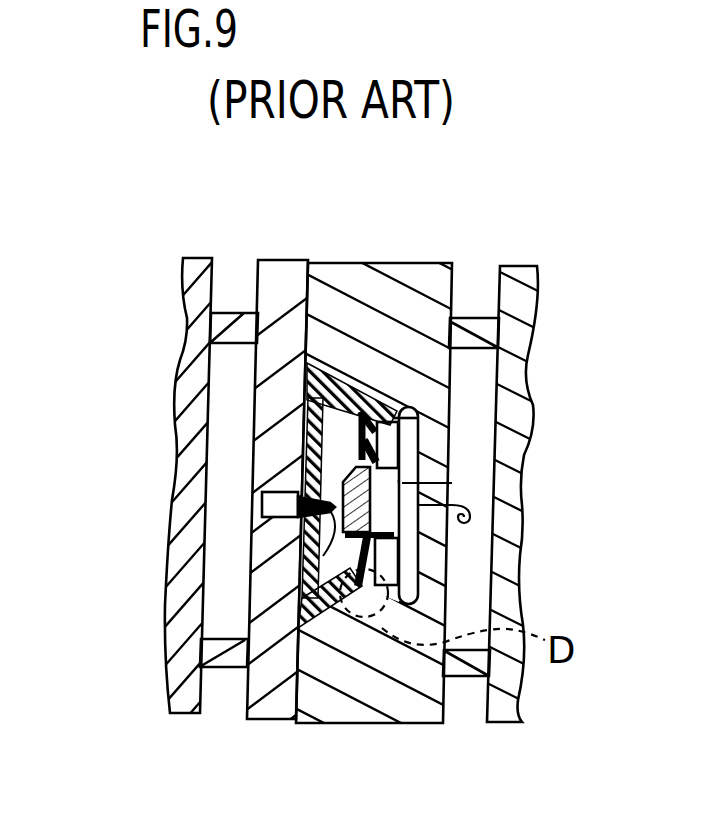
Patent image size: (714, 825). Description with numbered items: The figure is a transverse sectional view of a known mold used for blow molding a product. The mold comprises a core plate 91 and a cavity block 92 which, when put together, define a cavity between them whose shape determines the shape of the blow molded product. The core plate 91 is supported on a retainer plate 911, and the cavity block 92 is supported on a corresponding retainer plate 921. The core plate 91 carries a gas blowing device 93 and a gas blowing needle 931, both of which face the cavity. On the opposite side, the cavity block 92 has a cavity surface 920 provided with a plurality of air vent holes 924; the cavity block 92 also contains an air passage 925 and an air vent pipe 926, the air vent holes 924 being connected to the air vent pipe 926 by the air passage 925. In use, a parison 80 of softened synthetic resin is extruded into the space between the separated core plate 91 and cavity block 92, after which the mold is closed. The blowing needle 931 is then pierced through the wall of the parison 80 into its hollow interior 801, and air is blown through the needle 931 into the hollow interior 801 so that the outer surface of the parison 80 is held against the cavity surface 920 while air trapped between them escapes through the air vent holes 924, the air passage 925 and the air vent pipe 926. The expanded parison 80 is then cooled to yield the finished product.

The core plate 91 is at (290, 277).
The cavity block 92 is at (403, 298).
The retainer plate 911 is at (190, 350).
The retainer plate 921 is at (512, 372).
The parison 80 is at (305, 430).
The hollow interior 801 is at (322, 553).
The gas blowing device 93 is at (273, 492).
The gas blowing needle 931 is at (298, 518).
The cavity surface 920 is at (420, 567).
The air vent holes 924 is at (418, 441).
The air passage 925 is at (452, 483).
The air vent pipe 926 is at (478, 522).